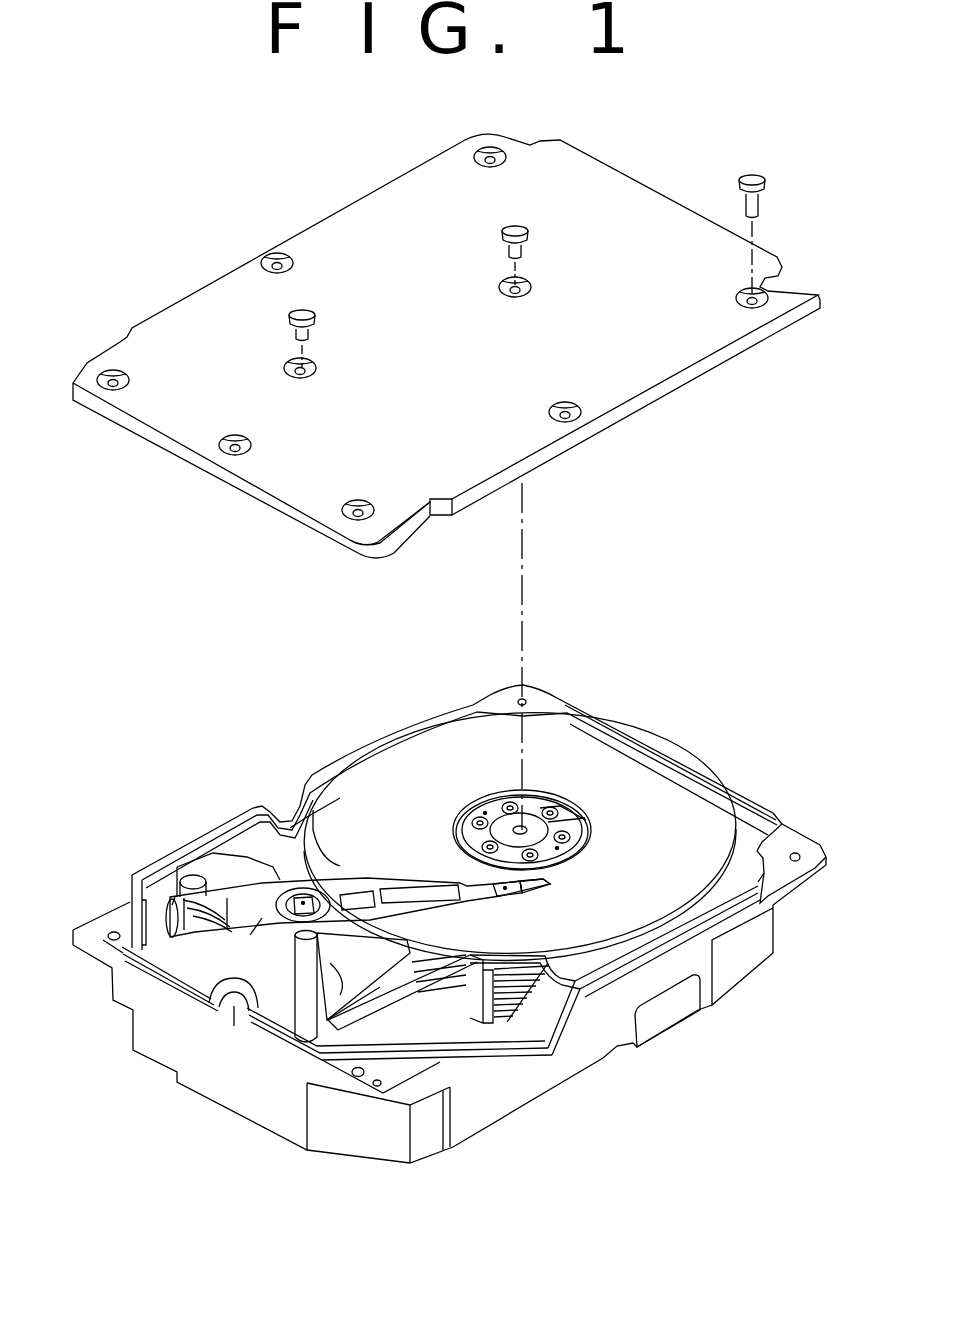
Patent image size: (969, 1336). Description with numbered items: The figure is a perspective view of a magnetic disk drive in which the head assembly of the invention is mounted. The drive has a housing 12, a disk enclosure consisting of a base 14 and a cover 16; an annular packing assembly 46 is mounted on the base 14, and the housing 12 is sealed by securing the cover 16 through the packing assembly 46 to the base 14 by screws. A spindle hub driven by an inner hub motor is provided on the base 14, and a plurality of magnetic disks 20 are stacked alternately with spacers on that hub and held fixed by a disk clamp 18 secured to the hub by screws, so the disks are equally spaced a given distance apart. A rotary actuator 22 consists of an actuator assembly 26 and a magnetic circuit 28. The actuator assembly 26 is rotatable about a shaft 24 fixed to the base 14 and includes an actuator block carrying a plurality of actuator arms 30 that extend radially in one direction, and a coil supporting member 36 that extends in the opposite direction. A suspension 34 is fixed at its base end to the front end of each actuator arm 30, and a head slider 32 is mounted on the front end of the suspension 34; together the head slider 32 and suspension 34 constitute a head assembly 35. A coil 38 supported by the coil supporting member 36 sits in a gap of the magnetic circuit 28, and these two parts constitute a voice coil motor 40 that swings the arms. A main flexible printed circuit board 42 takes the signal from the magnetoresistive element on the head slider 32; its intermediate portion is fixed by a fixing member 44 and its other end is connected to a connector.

The housing 12 is at (449, 951).
The base 14 is at (590, 1048).
The cover 16 is at (673, 207).
The disk clamp 18 is at (540, 796).
The magnetic disks 20 is at (653, 753).
The rotary actuator 22 is at (253, 877).
The shaft 24 is at (294, 896).
The actuator assembly 26 is at (340, 866).
The magnetic circuit 28 is at (178, 867).
The actuator arms 30 is at (400, 878).
The head slider 32 is at (547, 880).
The suspension 34 is at (502, 896).
The head assembly 35 is at (521, 898).
The coil supporting member 36 is at (262, 920).
The coil 38 is at (180, 897).
The voice coil motor 40 is at (158, 925).
The main flexible printed circuit board 42 is at (296, 968).
The fixing member 44 is at (460, 1023).
The annular packing assembly 46 is at (733, 783).